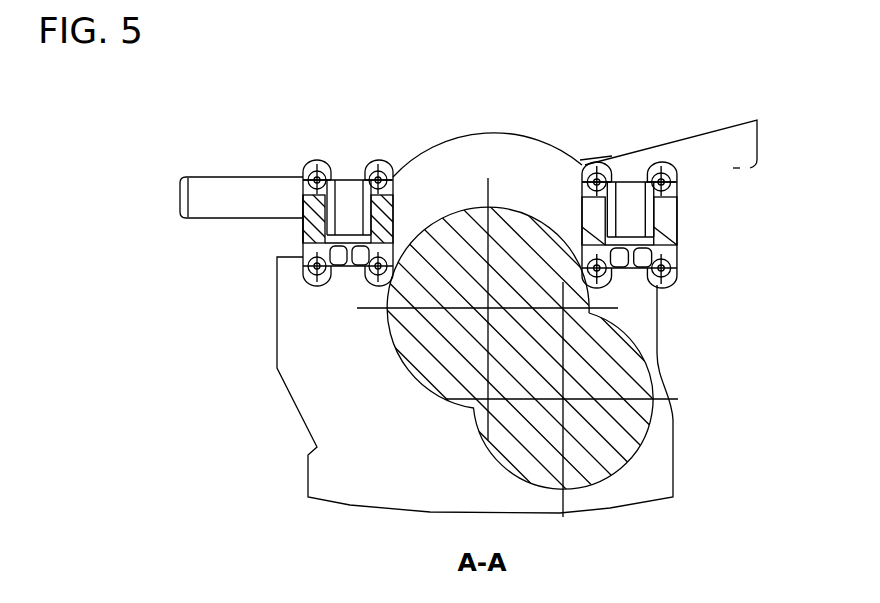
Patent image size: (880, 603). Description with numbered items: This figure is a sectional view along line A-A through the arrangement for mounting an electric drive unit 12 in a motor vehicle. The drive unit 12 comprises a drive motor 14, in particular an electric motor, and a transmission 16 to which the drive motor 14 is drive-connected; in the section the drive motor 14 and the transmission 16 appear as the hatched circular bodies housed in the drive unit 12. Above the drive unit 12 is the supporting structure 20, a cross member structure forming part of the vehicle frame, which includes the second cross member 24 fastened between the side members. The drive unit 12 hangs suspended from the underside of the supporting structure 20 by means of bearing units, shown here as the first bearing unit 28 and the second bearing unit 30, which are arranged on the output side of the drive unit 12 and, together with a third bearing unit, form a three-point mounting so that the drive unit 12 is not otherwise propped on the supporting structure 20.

The drive unit 12 is at (184, 391).
The drive motor 14 is at (300, 370).
The transmission 16 is at (632, 388).
The supporting structure 20 is at (168, 170).
The second cross member 24 is at (283, 193).
The first bearing unit 28 is at (302, 232).
The second bearing unit 30 is at (667, 227).